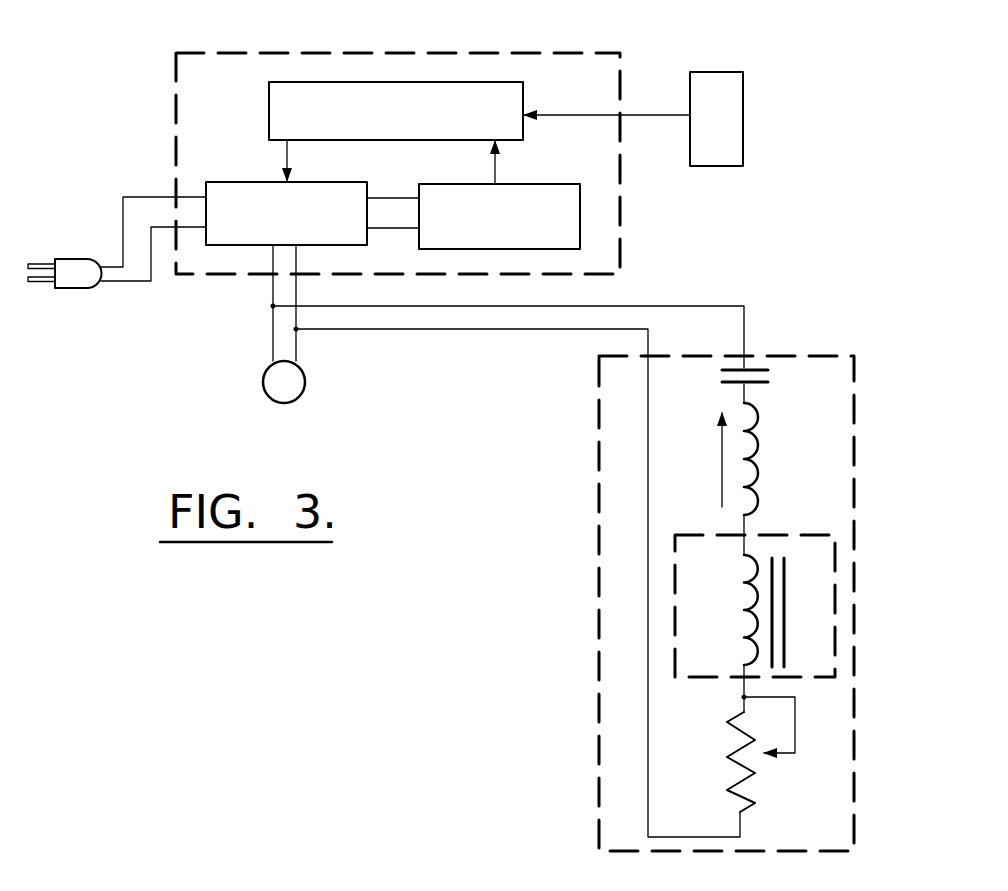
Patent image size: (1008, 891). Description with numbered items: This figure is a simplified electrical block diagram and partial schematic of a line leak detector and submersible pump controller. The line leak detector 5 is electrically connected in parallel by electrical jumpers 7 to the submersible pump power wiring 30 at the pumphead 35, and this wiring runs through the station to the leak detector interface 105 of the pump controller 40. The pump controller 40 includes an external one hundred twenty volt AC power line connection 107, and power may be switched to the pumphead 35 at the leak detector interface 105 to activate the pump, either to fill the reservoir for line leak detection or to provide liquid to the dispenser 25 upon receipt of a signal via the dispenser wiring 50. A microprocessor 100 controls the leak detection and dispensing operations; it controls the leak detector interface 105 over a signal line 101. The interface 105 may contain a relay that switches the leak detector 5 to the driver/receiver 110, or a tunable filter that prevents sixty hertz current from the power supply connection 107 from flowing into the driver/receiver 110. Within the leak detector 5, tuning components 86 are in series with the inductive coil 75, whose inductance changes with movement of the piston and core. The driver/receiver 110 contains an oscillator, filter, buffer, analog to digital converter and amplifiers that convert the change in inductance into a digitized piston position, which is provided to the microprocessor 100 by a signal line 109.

The line leak detector 5 is at (595, 422).
The electrical jumpers 7 is at (620, 331).
The dispenser 25 is at (743, 113).
The power wiring 30 is at (296, 340).
The pumphead 35 is at (306, 376).
The pump controller 40 is at (158, 61).
The dispenser wiring 50 is at (645, 114).
The inductive coil 75 is at (669, 662).
The tuning components 86 is at (714, 371).
The microprocessor 100 is at (268, 82).
The signal line 101 is at (289, 151).
The leak detector interface 105 is at (267, 180).
The power line connection 107 is at (85, 259).
The signal line 109 is at (493, 175).
The driver/receiver 110 is at (525, 183).